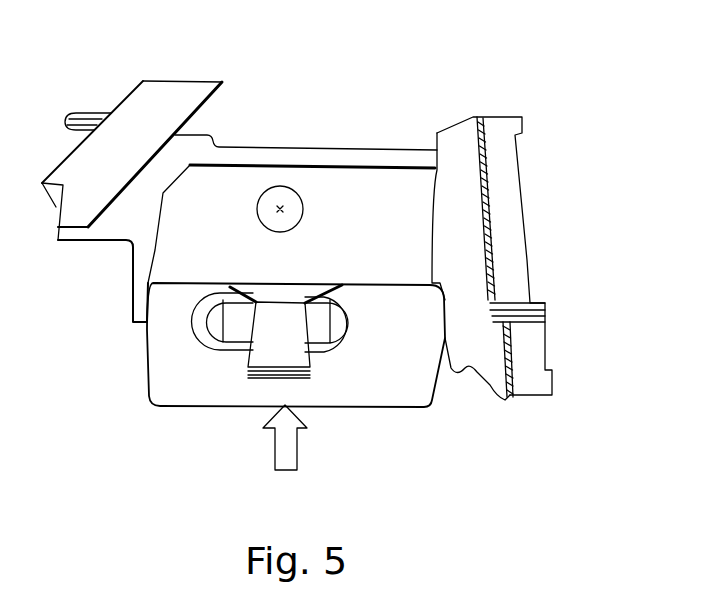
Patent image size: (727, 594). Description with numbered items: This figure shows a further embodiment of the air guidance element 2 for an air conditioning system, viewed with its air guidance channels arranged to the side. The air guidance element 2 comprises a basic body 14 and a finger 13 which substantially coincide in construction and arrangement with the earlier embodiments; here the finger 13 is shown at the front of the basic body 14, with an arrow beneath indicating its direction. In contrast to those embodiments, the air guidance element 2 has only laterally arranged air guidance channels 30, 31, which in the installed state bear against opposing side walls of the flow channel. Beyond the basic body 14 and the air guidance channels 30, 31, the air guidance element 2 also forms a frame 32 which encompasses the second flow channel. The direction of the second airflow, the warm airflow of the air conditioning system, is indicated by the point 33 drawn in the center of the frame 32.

The air guidance element 2 is at (392, 338).
The finger 13 is at (273, 348).
The basic body 14 is at (178, 367).
The air guidance channel 30 is at (507, 213).
The air guidance channel 31 is at (152, 97).
The frame 32 is at (368, 157).
The point 33 is at (277, 197).